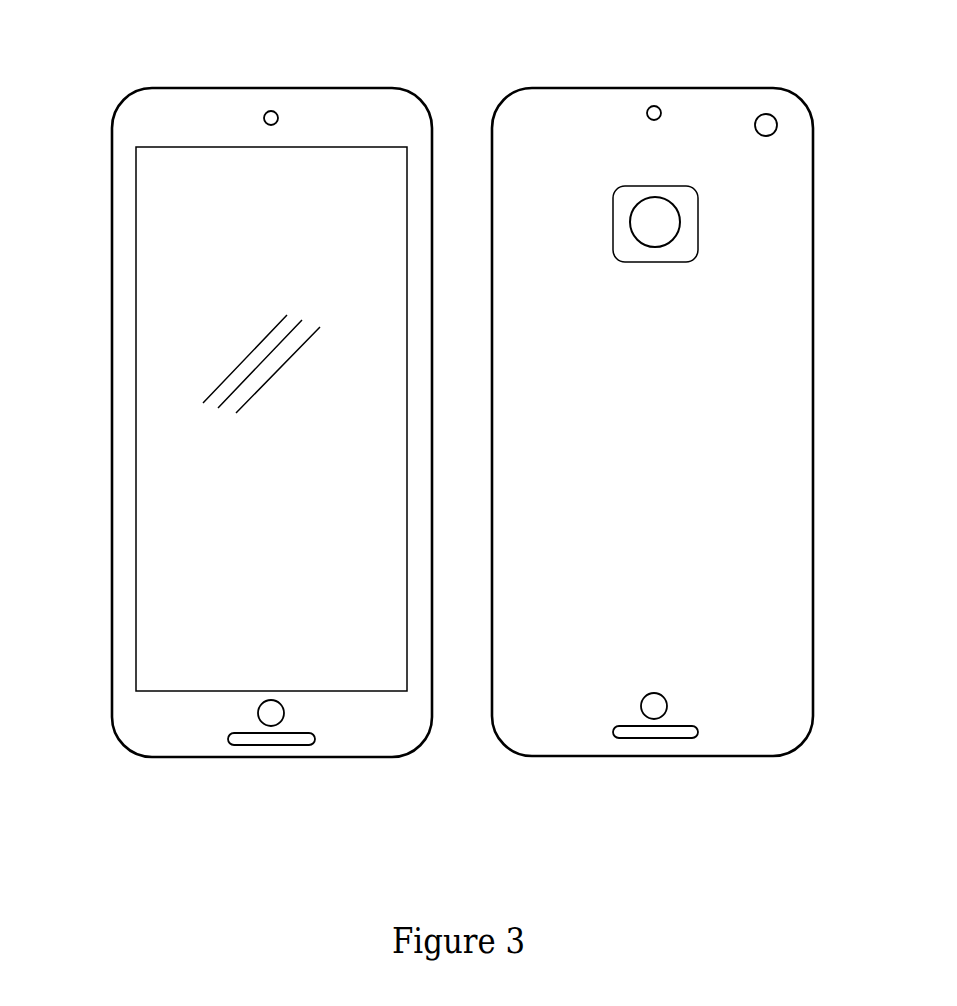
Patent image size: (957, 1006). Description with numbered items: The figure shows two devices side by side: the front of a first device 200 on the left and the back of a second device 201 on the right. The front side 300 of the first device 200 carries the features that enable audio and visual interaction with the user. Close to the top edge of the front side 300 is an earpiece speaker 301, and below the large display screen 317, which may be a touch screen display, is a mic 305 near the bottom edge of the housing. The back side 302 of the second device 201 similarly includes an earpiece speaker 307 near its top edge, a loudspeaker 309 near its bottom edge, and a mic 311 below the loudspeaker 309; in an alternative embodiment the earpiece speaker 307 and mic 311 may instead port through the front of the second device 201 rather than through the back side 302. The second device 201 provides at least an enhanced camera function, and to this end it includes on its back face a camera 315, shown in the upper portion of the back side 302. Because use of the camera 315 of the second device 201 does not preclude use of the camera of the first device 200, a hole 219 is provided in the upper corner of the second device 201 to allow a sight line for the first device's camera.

The first device 200 is at (231, 445).
The second device 201 is at (686, 437).
The hole 219 is at (766, 125).
The front side 300 is at (122, 553).
The earpiece speaker 301 is at (266, 113).
The back side 302 is at (786, 540).
The mic 305 is at (262, 716).
The earpiece speaker 307 is at (652, 107).
The loudspeaker 309 is at (646, 706).
The mic 311 is at (614, 732).
The camera 315 is at (644, 222).
The display screen 317 is at (157, 333).